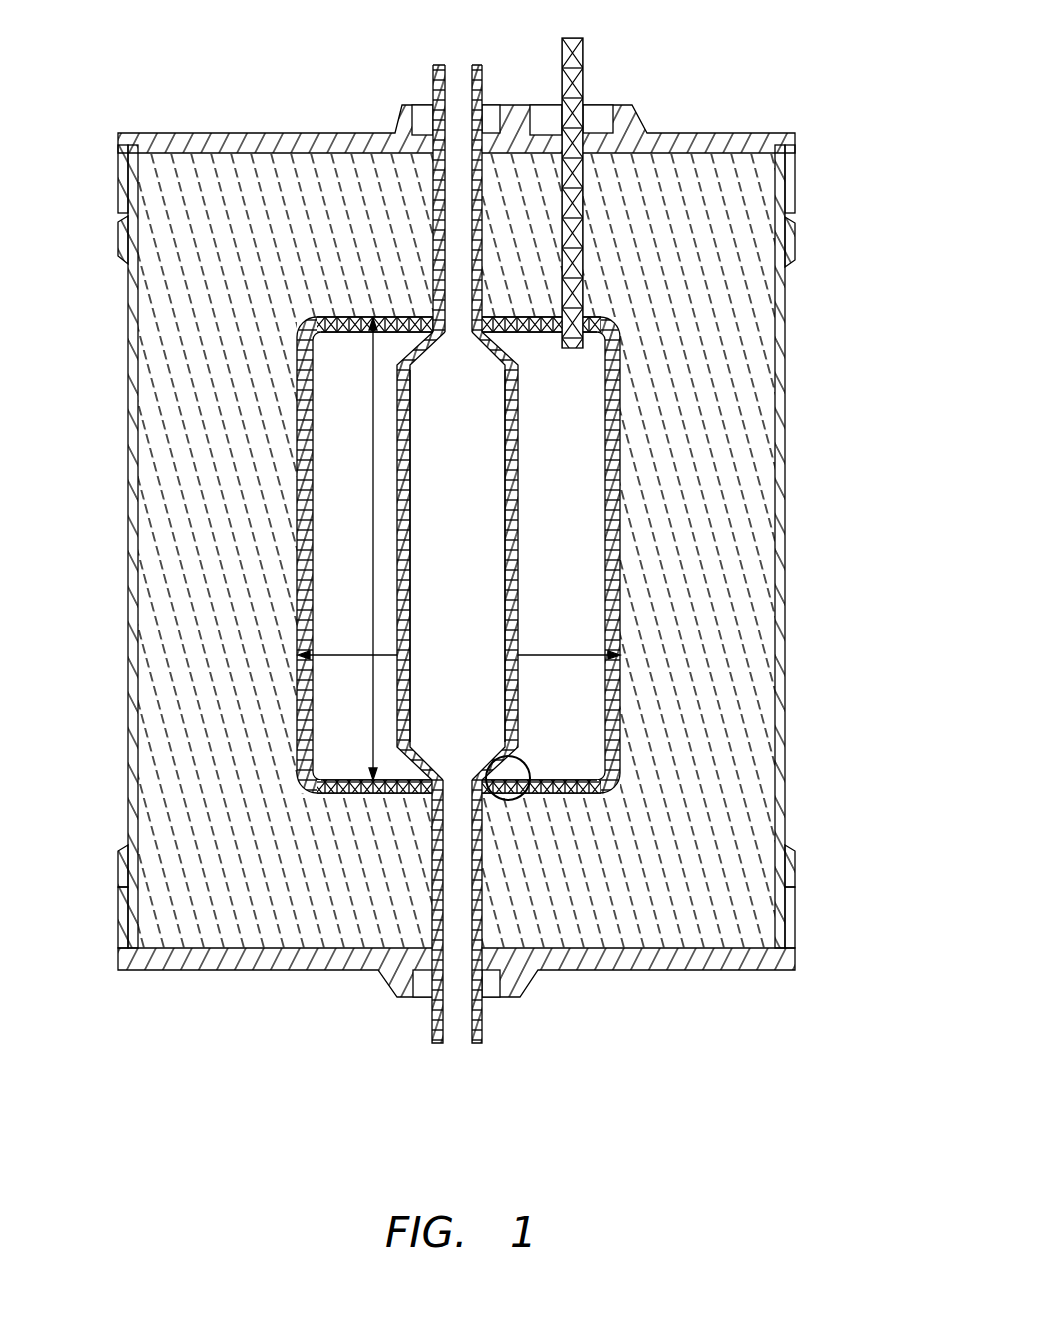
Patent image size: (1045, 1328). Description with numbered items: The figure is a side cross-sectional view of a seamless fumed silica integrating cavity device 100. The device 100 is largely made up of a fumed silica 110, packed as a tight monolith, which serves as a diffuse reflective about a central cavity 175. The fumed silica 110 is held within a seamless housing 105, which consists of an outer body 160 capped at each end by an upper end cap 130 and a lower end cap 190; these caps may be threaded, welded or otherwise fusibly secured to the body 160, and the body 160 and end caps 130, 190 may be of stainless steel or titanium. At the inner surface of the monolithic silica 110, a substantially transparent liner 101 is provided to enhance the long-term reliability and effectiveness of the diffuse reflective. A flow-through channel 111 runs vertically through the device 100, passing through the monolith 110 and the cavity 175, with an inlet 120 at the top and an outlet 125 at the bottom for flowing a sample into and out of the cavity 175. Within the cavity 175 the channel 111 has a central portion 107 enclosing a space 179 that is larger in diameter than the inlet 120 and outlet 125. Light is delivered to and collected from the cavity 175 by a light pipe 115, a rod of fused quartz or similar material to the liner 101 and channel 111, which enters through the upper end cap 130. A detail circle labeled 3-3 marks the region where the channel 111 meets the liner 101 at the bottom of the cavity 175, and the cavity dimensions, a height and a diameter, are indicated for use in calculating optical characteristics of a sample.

The seamless fumed silica integrating cavity device 100 is at (814, 45).
The transparent liner 101 is at (620, 385).
The housing 105 is at (122, 258).
The central portion of channel 107 is at (520, 548).
The fumed silica monolith 110 is at (730, 250).
The flow-through channel 111 is at (440, 150).
The light pipe 115 is at (572, 98).
The inlet 120 is at (462, 120).
The outlet 125 is at (455, 958).
The upper end cap 130 is at (232, 133).
The outer body 160 is at (787, 348).
The cavity 175 is at (590, 633).
The space 179 is at (432, 475).
The lower end cap 190 is at (797, 925).
The section detail circle 3-3 is at (530, 765).